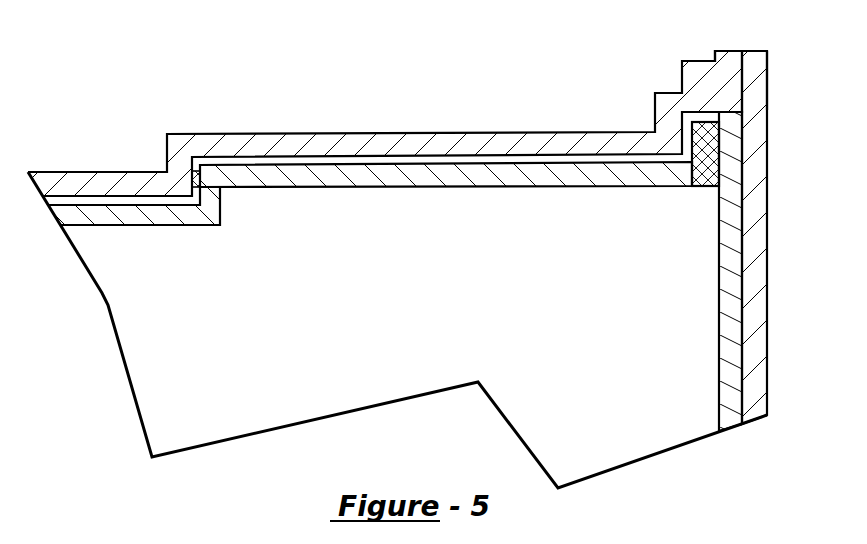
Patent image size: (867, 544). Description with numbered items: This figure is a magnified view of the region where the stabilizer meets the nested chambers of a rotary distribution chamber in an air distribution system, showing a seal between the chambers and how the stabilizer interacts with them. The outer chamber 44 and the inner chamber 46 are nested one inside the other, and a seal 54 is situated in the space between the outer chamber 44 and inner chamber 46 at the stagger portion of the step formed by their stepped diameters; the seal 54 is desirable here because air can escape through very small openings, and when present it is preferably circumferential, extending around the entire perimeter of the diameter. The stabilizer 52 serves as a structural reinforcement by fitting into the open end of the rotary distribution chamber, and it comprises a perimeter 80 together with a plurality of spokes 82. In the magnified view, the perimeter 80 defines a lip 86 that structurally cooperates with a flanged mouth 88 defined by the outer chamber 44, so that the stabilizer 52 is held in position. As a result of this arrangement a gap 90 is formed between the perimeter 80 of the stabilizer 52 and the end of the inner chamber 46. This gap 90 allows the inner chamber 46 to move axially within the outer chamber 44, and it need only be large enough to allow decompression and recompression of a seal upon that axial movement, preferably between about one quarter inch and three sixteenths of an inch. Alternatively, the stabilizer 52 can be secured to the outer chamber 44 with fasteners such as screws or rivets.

The outer chamber 44 is at (392, 133).
The inner chamber 46 is at (535, 177).
The stabilizer 52 is at (760, 178).
The seal 54 is at (192, 173).
The perimeter 80 is at (762, 88).
The spokes 82 is at (735, 238).
The lip 86 is at (762, 68).
The flanged mouth 88 is at (723, 60).
The gap 90 is at (715, 140).